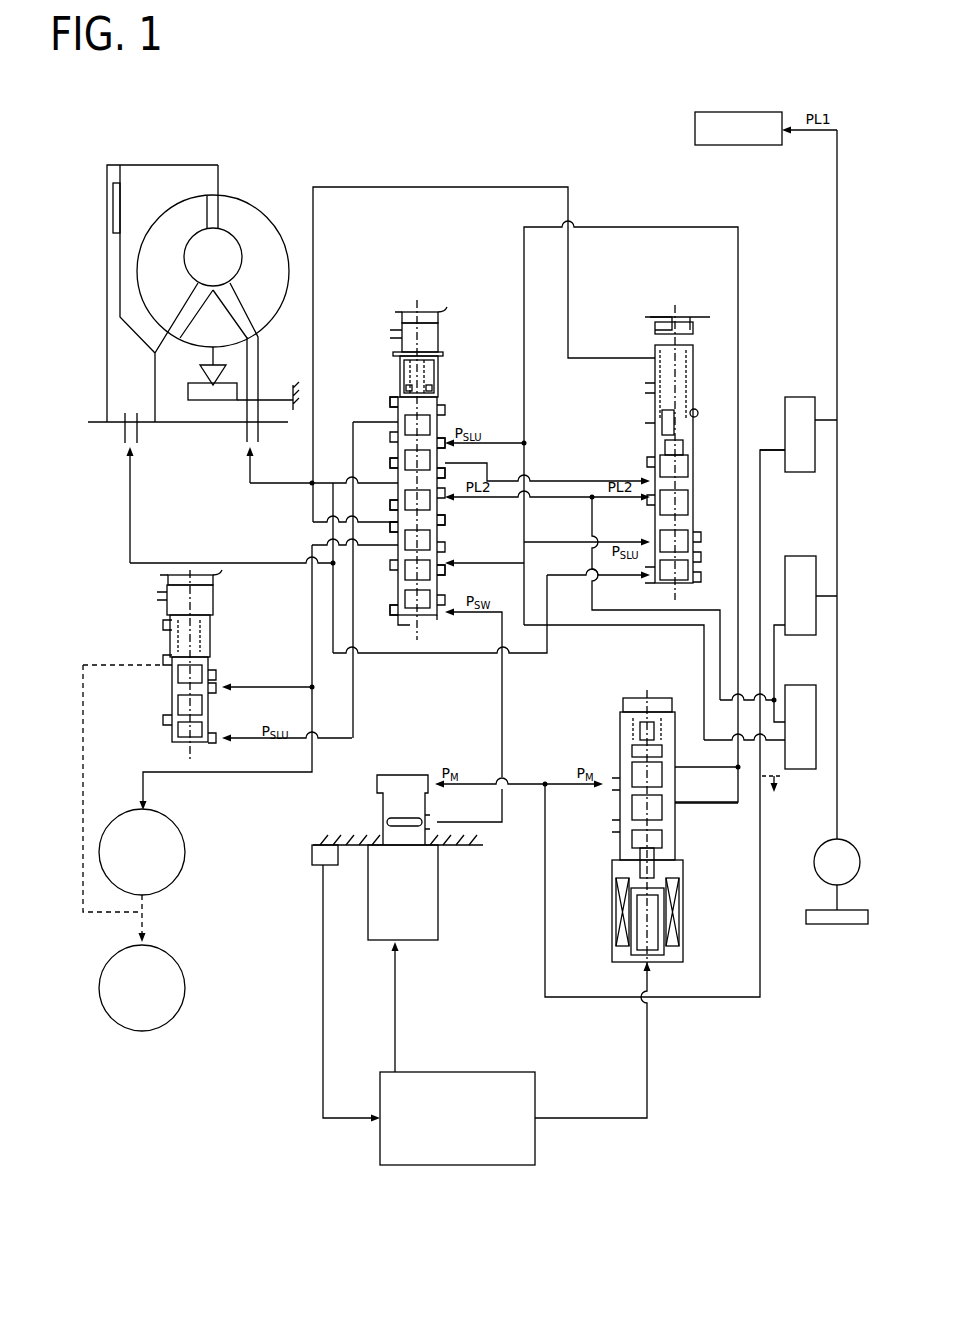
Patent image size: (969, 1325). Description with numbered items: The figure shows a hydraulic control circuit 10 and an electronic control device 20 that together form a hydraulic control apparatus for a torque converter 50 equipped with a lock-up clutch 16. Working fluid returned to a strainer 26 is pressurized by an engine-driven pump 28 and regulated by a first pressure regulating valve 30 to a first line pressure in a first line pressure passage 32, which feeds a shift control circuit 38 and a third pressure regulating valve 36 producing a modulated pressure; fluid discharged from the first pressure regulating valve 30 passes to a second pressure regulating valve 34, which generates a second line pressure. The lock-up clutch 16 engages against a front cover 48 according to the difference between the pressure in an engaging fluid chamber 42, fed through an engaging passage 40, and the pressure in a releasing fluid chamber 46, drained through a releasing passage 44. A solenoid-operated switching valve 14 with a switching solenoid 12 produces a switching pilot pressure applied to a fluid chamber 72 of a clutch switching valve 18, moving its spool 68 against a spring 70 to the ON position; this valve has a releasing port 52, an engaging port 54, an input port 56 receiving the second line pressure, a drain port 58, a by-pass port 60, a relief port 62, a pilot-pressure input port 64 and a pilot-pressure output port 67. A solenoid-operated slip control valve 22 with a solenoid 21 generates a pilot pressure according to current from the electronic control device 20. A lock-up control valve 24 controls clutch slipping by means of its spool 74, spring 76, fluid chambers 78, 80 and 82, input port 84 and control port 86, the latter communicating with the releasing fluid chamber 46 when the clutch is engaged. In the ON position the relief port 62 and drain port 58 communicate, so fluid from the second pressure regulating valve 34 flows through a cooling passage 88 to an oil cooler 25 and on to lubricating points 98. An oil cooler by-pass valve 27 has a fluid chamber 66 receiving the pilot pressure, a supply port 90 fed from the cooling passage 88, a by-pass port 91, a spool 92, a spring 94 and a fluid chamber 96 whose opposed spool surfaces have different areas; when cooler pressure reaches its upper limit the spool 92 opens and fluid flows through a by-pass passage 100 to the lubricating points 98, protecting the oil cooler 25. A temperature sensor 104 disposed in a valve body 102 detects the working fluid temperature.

The hydraulic control circuit 10 is at (422, 70).
The switching solenoid 12 is at (418, 932).
The solenoid-operated switching valve 14 is at (407, 882).
The lock-up clutch 16 is at (163, 290).
The clutch switching valve 18 is at (484, 417).
The electronic control device 20 is at (470, 1075).
The solenoid 21 is at (675, 935).
The solenoid-operated slip control valve 22 is at (667, 830).
The lock-up control valve 24 is at (630, 511).
The oil cooler 25 is at (172, 868).
The strainer 26 is at (830, 925).
The oil cooler by-pass valve 27 is at (197, 668).
The pump 28 is at (842, 843).
The first pressure regulating valve 30 is at (800, 565).
The first line pressure passage 32 is at (838, 520).
The second pressure regulating valve 34 is at (800, 772).
The third pressure regulating valve 36 is at (798, 405).
The shift control circuit 38 is at (722, 123).
The engaging passage 40 is at (252, 373).
The engaging fluid chamber 42 is at (152, 180).
The releasing passage 44 is at (125, 430).
The releasing fluid chamber 46 is at (120, 368).
The front cover 48 is at (113, 200).
The torque converter 50 is at (266, 180).
The releasing port 52 is at (396, 478).
The engaging port 54 is at (396, 522).
The input port 56 is at (446, 505).
The drain port 58 is at (396, 544).
The by-pass port 60 is at (446, 466).
The relief port 62 is at (446, 565).
The pilot-pressure input port 64 is at (446, 445).
The fluid chamber 66 is at (218, 735).
The pilot-pressure output port 67 is at (397, 425).
The spool 68 is at (397, 598).
The spring 70 is at (438, 380).
The fluid chamber 72 is at (428, 622).
The spool 74 is at (694, 443).
The spring 76 is at (697, 411).
The fluid chamber 78 is at (655, 348).
The fluid chamber 80 is at (696, 578).
The fluid chamber 82 is at (696, 540).
The input port 84 is at (652, 508).
The control port 86 is at (650, 478).
The cooling passage 88 is at (312, 644).
The supply port 90 is at (216, 692).
The by-pass port 91 is at (165, 660).
The spool 92 is at (170, 722).
The spring 94 is at (165, 628).
The fluid chamber 96 is at (218, 678).
The lubricating points 98 is at (160, 1015).
The by-pass passage 100 is at (83, 735).
The valve body 102 is at (333, 838).
The temperature sensor 104 is at (312, 858).